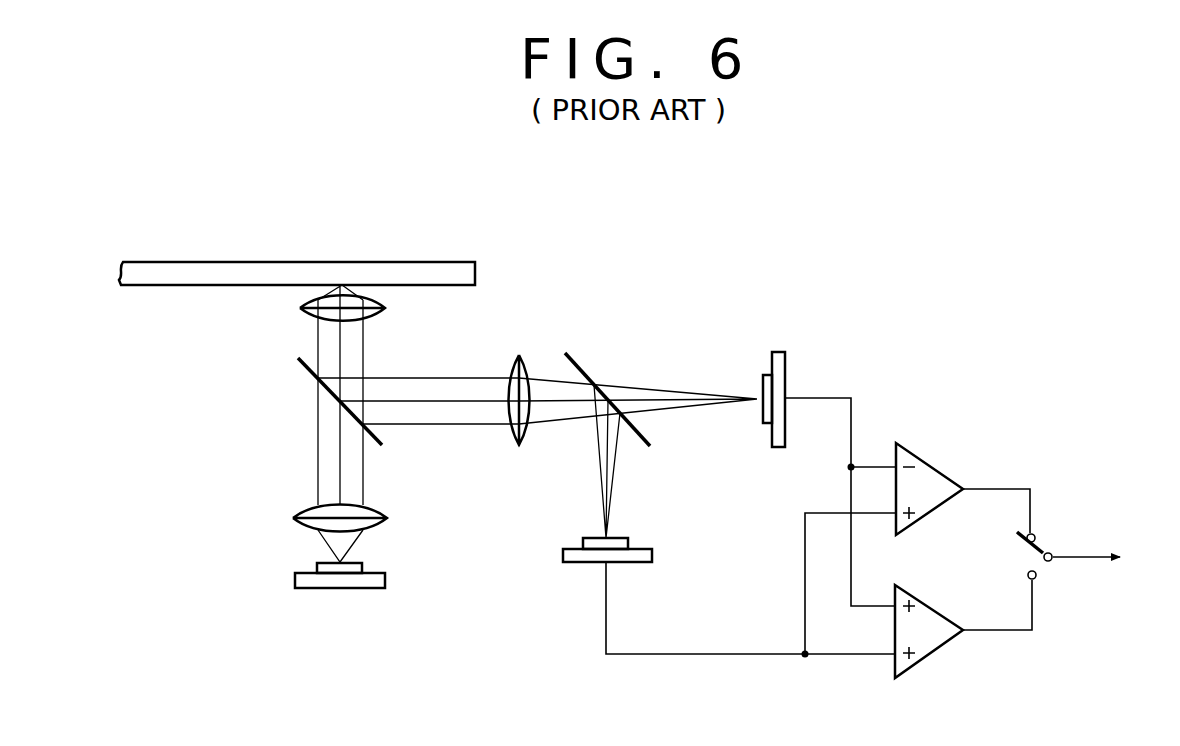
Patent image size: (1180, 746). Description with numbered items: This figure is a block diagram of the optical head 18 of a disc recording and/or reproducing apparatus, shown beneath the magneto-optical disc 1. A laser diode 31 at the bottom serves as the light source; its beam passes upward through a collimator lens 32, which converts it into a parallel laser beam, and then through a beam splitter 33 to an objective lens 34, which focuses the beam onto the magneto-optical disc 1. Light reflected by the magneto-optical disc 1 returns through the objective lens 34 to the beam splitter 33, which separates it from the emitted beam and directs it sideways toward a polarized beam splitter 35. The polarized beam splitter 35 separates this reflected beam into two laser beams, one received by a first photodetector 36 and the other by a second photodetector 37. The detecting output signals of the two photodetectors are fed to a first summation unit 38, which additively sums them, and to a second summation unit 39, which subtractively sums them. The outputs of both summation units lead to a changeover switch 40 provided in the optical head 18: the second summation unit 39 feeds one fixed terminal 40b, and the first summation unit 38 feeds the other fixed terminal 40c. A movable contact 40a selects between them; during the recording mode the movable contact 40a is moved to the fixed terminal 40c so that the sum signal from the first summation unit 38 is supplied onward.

The magneto-optical disc 1 is at (163, 272).
The optical head 18 is at (533, 296).
The laser diode 31 is at (296, 575).
The collimator lens 32 is at (305, 513).
The beam splitter 33 is at (297, 362).
The objective lens 34 is at (300, 312).
The polarized beam splitter 35 is at (578, 364).
The first photodetector 36 is at (786, 366).
The second photodetector 37 is at (570, 563).
The first summation unit 38 is at (934, 615).
The second summation unit 39 is at (934, 477).
The changeover switch 40 is at (1060, 566).
The movable contact 40a is at (1052, 555).
The fixed terminal 40b is at (1036, 535).
The fixed terminal 40c is at (1035, 579).